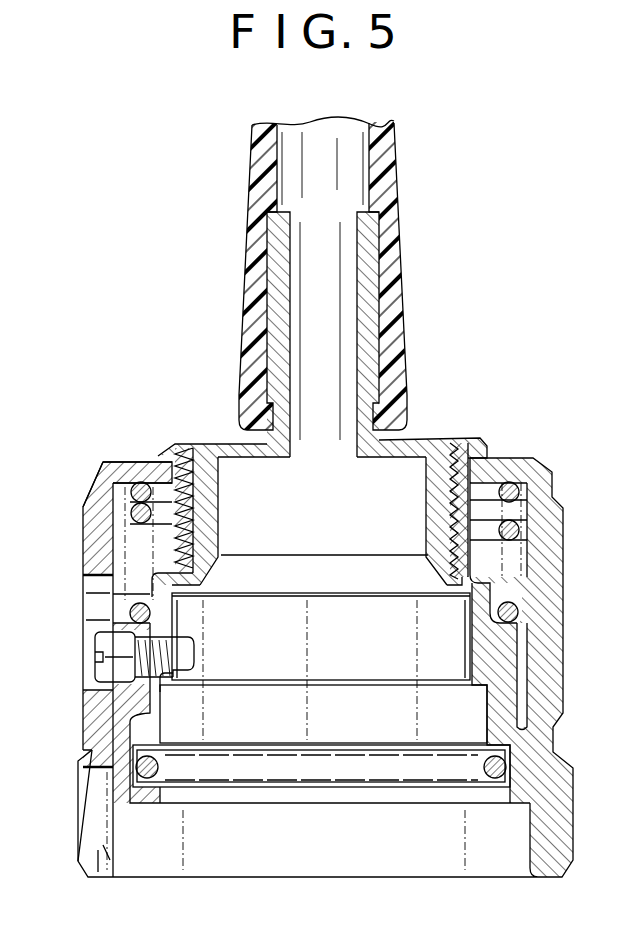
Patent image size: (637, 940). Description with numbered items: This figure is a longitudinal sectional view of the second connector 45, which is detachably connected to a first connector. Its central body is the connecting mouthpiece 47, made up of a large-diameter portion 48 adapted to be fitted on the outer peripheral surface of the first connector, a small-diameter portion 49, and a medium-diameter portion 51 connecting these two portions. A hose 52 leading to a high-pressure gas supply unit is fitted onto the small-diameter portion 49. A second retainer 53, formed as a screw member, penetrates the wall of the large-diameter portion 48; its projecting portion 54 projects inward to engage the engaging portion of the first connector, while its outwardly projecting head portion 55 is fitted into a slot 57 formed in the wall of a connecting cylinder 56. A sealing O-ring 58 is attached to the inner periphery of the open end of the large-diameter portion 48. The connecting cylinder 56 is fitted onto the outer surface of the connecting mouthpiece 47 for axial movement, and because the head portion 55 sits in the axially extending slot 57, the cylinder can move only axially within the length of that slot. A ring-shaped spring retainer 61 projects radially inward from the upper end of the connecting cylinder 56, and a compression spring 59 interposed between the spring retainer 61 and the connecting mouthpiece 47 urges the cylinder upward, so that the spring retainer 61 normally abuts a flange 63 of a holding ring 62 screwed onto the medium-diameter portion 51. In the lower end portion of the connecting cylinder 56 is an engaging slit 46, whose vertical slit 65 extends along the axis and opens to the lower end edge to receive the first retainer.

The second connector 45 is at (509, 388).
The engaging slit 46 is at (92, 800).
The connecting mouthpiece 47 is at (466, 647).
The large-diameter portion 48 is at (490, 715).
The small-diameter portion 49 is at (372, 362).
The medium-diameter portion 51 is at (440, 522).
The hose 52 is at (388, 160).
The second retainer 53 is at (163, 692).
The projecting portion 54 is at (195, 650).
The head portion 55 is at (100, 668).
The connecting cylinder 56 is at (100, 522).
The slot 57 is at (96, 598).
The sealing O-ring 58 is at (140, 790).
The compression spring 59 is at (128, 492).
The spring retainer 61 is at (117, 460).
The holding ring 62 is at (203, 530).
The flange 63 is at (183, 445).
The vertical slit 65 is at (105, 853).